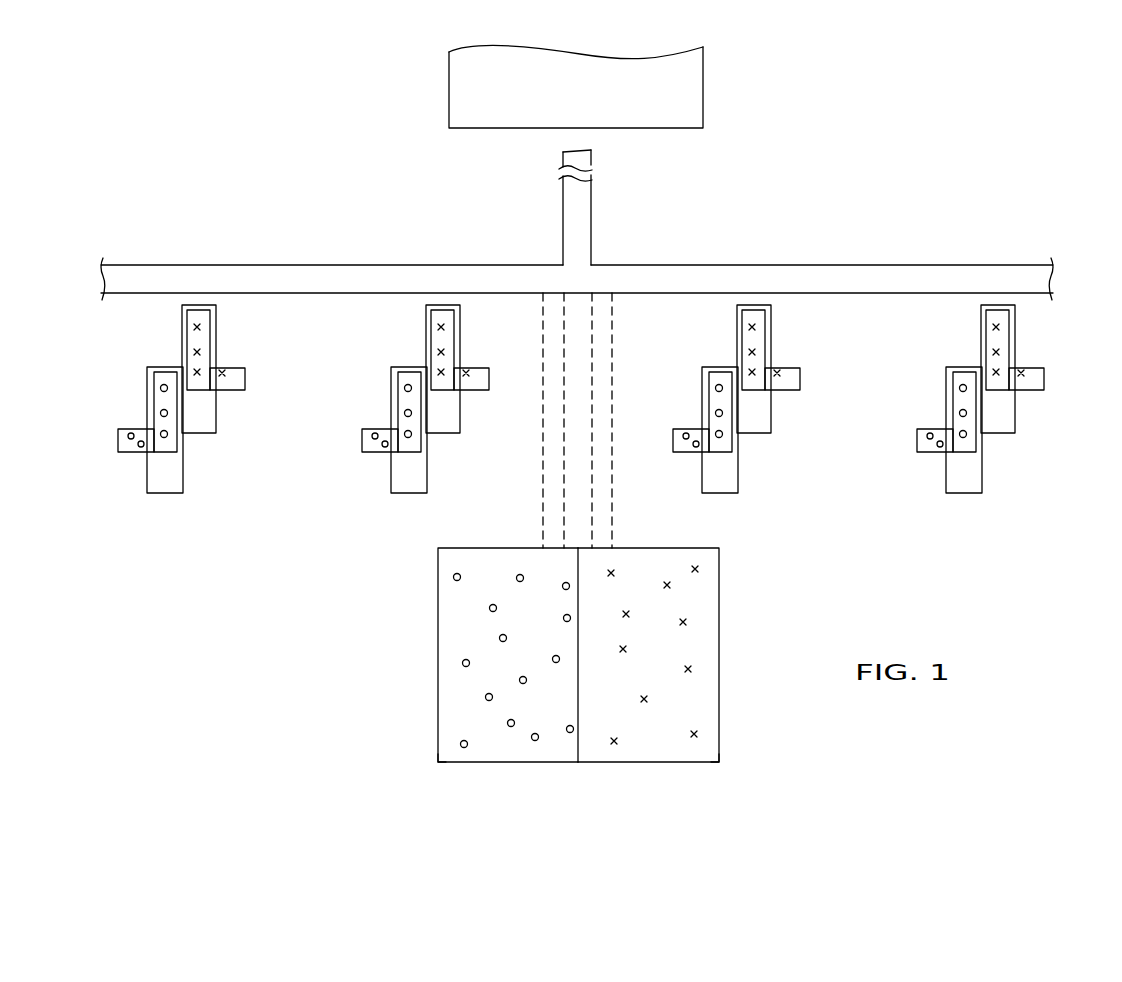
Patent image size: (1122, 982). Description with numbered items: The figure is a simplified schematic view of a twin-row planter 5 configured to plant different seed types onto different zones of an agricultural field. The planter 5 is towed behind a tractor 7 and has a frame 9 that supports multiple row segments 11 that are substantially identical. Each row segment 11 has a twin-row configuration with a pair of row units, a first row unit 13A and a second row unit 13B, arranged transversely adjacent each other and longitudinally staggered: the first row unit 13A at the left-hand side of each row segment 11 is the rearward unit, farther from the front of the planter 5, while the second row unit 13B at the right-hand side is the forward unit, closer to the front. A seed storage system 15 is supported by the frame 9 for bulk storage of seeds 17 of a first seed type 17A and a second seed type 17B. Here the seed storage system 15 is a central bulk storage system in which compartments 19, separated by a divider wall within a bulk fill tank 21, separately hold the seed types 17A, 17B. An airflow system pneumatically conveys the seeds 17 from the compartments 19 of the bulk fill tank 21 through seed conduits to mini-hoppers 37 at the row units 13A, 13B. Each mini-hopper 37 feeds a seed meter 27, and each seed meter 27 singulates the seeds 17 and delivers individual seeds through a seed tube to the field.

The twin-row planter 5 is at (904, 198).
The tractor 7 is at (738, 85).
The frame 9 is at (604, 253).
The row segment 11 is at (578, 389).
The first row unit 13A is at (161, 356).
The second row unit 13B is at (198, 292).
The seed storage system 15 is at (594, 676).
The seeds 17 is at (550, 744).
The first seed type 17A is at (130, 433).
The second seed type 17B is at (233, 384).
The compartments 19 is at (447, 767).
The bulk fill tank 21 is at (597, 771).
The seed meter 27 is at (204, 330).
The mini-hopper 37 is at (235, 366).